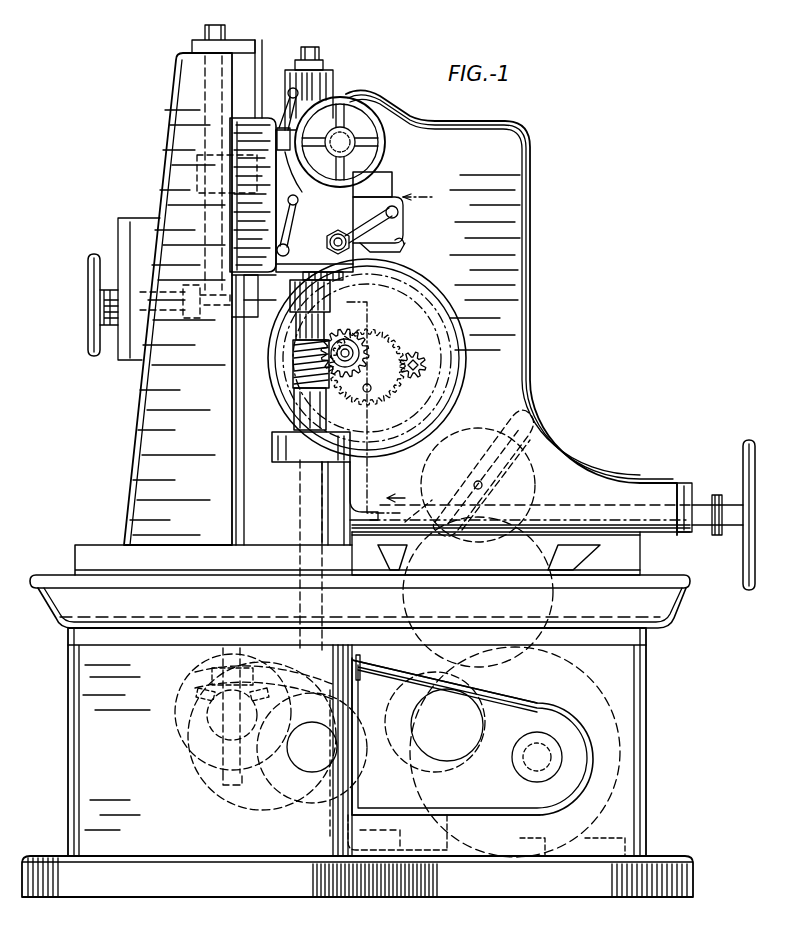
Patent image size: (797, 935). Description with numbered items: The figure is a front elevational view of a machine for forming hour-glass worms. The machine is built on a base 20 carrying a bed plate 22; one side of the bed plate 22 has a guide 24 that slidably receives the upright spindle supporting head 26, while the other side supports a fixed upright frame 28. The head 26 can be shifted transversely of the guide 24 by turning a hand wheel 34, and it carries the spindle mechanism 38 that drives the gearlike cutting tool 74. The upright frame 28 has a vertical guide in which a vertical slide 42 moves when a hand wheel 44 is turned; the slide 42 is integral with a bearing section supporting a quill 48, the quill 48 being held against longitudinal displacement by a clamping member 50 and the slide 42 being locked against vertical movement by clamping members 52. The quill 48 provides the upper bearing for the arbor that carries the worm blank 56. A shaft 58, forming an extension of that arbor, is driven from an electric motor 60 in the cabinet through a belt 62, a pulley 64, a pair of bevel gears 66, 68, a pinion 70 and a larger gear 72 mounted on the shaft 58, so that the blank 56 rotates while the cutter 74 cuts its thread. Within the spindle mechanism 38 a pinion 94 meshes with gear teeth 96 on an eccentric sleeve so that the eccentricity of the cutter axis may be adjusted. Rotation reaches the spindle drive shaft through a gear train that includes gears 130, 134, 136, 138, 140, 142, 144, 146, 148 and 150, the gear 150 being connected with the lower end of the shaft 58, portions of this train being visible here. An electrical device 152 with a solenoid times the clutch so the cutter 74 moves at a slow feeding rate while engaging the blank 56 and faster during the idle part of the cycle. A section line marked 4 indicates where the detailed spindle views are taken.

The base 20 is at (88, 751).
The bed plate 22 is at (62, 633).
The guide 24 is at (548, 560).
The spindle supporting head 26 is at (522, 342).
The upright frame 28 is at (145, 446).
The hand wheel 34 is at (748, 446).
The spindle mechanism 38 is at (450, 355).
The vertical slide 42 is at (246, 120).
The hand wheel 44 is at (90, 273).
The quill 48 is at (330, 293).
The clamping member 50 is at (403, 220).
The clamping members 52 is at (296, 224).
The worm blank 56 is at (300, 366).
The shaft 58 is at (300, 512).
The electric motor 60 is at (612, 713).
The belt 62 is at (408, 815).
The pulley 64 is at (195, 759).
The bevel gear 66 is at (207, 739).
The bevel gear 68 is at (205, 676).
The pinion 70 is at (222, 673).
The larger gear 72 is at (300, 673).
The gearlike cutting tool 74 is at (360, 347).
The pinion 94 is at (416, 378).
The gear teeth 96 is at (385, 404).
The gear 130 is at (452, 326).
The gear 134 is at (540, 480).
The gear 136 is at (540, 658).
The gear 138 is at (533, 783).
The gear 140 is at (520, 693).
The gear 142 is at (332, 821).
The gear 144 is at (377, 837).
The gear 146 is at (312, 772).
The gear 148 is at (297, 800).
The gear 150 is at (300, 790).
The electrical device 152 is at (417, 243).
The section line 4 is at (390, 345).